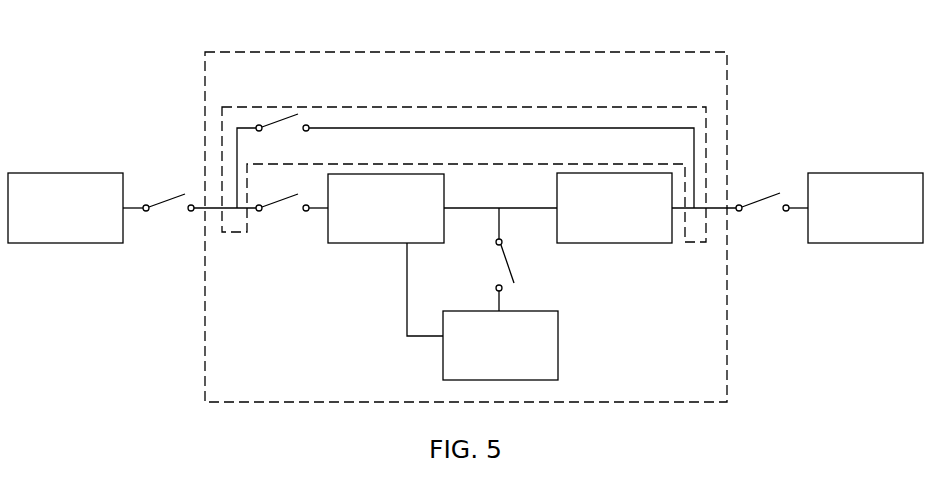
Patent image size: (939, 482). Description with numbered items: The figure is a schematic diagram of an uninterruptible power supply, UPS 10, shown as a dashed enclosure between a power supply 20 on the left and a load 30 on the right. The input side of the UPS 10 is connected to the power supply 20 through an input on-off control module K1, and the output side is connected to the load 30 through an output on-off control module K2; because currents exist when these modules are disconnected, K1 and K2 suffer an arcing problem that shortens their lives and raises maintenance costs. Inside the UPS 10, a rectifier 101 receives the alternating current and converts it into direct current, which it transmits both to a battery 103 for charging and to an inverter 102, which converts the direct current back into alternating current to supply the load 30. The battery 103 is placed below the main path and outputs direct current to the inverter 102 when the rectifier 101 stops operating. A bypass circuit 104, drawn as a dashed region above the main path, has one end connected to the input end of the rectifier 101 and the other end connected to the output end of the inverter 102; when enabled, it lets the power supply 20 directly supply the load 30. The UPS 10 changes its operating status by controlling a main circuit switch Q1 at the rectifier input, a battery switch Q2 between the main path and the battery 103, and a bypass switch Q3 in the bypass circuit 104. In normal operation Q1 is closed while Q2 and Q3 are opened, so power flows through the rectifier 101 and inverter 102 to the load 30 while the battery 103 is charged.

The uninterruptible power supply 10 is at (470, 63).
The bypass circuit 104 is at (552, 114).
The power supply 20 is at (67, 184).
The load 30 is at (867, 188).
The rectifier 101 is at (381, 235).
The inverter 102 is at (618, 235).
The battery 103 is at (553, 341).
The input on-off control module K1 is at (168, 220).
The output on-off control module K2 is at (762, 220).
The main circuit switch Q1 is at (282, 221).
The battery switch Q2 is at (524, 259).
The bypass switch Q3 is at (282, 135).